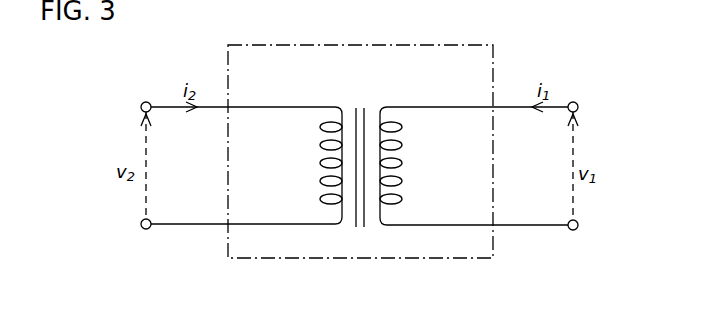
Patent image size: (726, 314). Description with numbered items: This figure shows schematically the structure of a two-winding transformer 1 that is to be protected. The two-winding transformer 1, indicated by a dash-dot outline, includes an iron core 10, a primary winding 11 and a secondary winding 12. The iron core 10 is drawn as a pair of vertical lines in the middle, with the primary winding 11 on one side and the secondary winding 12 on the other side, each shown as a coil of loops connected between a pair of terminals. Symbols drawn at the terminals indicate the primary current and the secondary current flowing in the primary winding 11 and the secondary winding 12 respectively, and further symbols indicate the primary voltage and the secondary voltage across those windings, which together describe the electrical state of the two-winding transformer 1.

The two-winding transformer 1 is at (457, 45).
The iron core 10 is at (358, 105).
The primary winding 11 is at (402, 164).
The secondary winding 12 is at (320, 166).